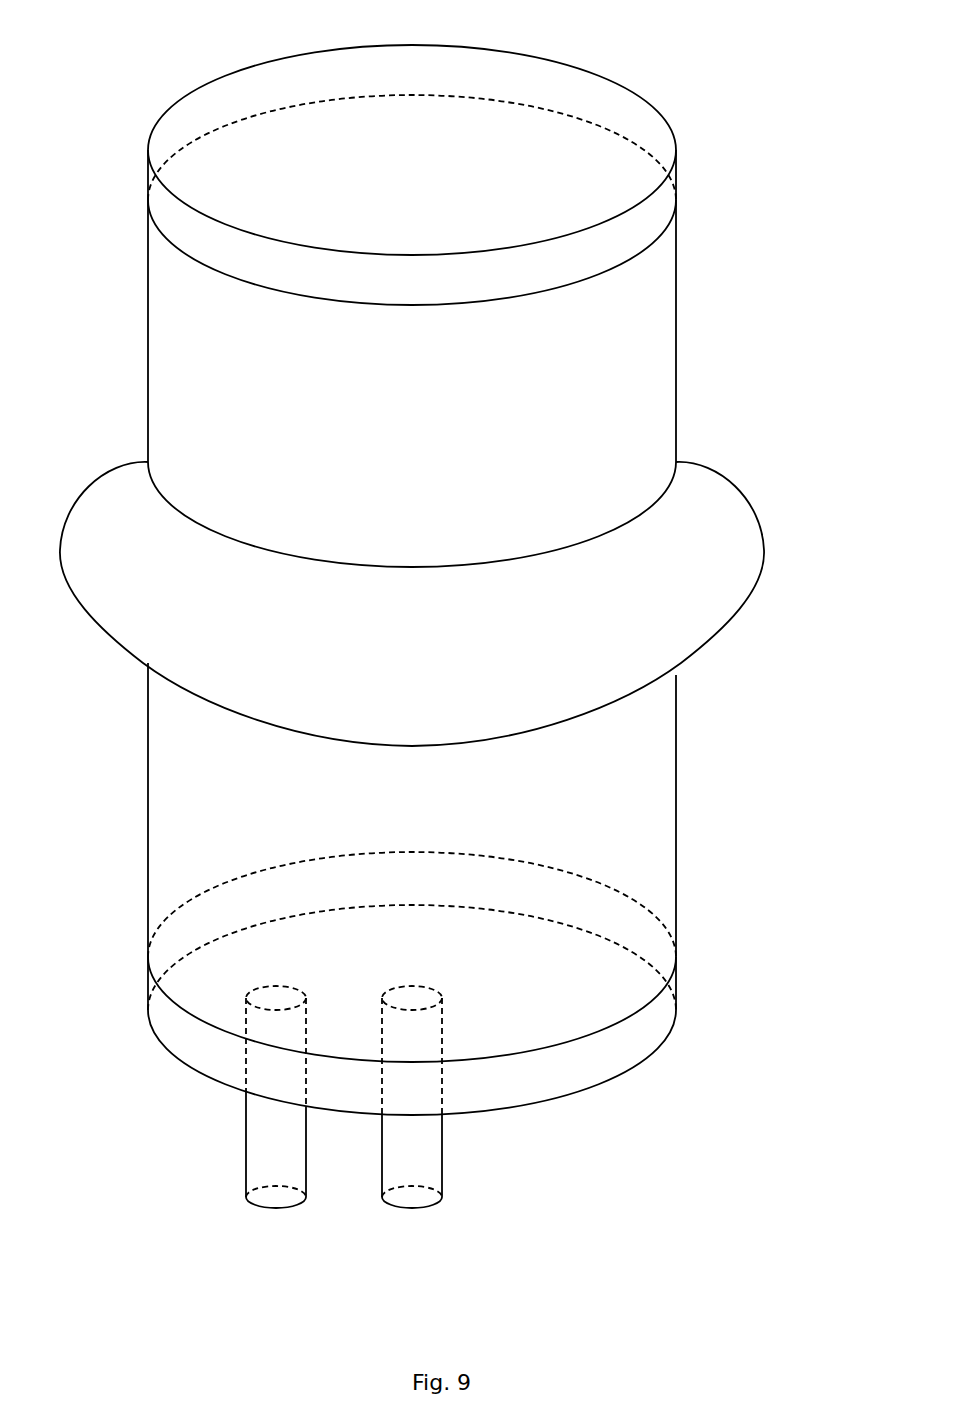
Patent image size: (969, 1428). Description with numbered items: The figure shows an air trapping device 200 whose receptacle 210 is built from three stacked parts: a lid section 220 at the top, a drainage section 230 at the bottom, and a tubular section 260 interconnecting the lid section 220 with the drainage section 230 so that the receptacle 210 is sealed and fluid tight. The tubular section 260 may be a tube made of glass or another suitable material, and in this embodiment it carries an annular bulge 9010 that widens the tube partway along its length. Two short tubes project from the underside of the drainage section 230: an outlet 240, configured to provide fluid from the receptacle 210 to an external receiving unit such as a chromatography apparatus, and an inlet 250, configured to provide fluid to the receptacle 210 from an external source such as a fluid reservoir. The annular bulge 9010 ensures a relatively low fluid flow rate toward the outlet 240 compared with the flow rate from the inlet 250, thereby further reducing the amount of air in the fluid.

The air trapping device 200 is at (464, 619).
The receptacle 210 is at (649, 300).
The lid section 220 is at (202, 116).
The drainage section 230 is at (171, 1033).
The outlet 240 is at (260, 1143).
The inlet 250 is at (415, 1143).
The tubular section 260 is at (153, 277).
The annular bulge 9010 is at (714, 535).